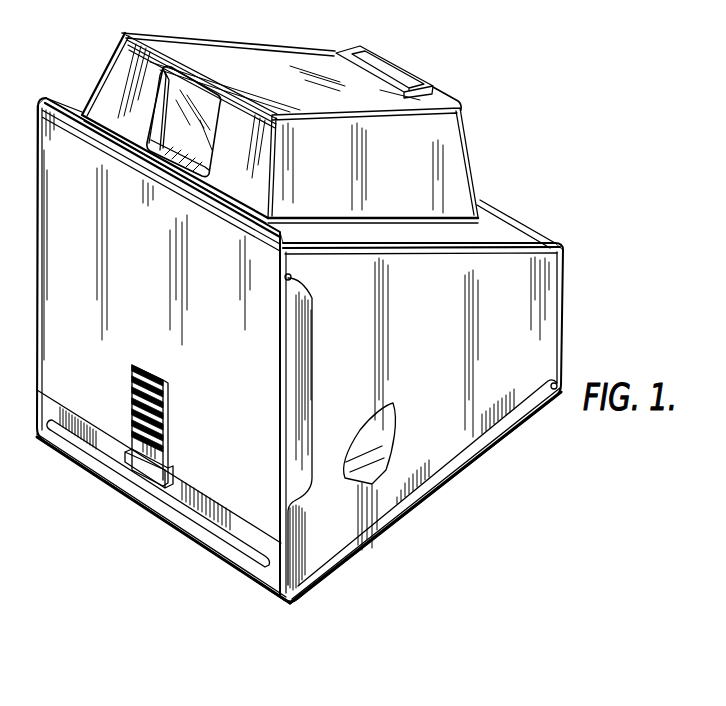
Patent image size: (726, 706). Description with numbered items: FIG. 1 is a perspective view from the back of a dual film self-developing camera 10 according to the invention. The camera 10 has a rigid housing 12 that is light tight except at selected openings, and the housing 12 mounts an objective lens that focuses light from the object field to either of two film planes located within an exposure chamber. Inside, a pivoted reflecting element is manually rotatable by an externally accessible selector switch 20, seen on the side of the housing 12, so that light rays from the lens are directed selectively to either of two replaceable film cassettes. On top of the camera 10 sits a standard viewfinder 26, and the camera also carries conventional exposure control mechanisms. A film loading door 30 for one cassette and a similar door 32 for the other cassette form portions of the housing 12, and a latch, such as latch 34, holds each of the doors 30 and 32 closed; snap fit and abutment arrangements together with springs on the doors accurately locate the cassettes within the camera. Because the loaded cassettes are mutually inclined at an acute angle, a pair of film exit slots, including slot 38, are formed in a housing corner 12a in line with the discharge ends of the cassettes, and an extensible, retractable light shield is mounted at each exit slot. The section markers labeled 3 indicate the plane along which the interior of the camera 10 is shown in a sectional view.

The self-developing camera 10 is at (486, 86).
The housing 12 is at (566, 287).
The housing corner 12a is at (288, 612).
The selector switch 20 is at (368, 437).
The viewfinder 26 is at (170, 72).
The film loading door 30 is at (232, 367).
The door 32 is at (500, 440).
The latch 34 is at (167, 418).
The film exit slot 38 is at (174, 520).
The section line 3- 3 is at (265, 289).